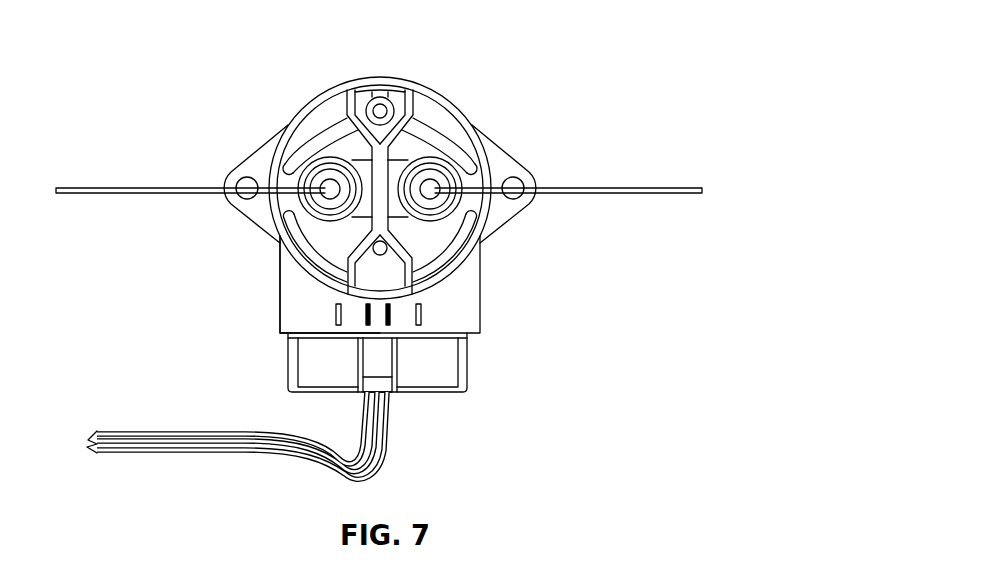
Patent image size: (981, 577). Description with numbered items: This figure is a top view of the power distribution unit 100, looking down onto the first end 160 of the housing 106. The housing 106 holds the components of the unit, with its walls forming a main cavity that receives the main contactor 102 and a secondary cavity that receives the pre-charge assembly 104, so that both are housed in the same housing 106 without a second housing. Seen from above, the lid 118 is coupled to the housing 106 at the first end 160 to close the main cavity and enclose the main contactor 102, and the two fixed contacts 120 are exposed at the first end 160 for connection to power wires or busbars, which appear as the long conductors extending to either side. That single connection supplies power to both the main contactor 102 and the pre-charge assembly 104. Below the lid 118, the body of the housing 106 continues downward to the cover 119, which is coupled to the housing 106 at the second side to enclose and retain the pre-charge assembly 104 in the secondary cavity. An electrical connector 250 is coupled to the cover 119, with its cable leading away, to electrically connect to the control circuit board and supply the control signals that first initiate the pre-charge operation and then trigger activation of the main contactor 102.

The power distribution unit 100 is at (565, 72).
The main contactor 102 is at (444, 124).
The lid 118 is at (320, 117).
The fixed contacts 120 is at (322, 168).
The housing 106 is at (470, 320).
The first end 160 is at (292, 318).
The pre-charge assembly 104 is at (311, 367).
The cover 119 is at (441, 375).
The electrical connector 250 is at (389, 396).